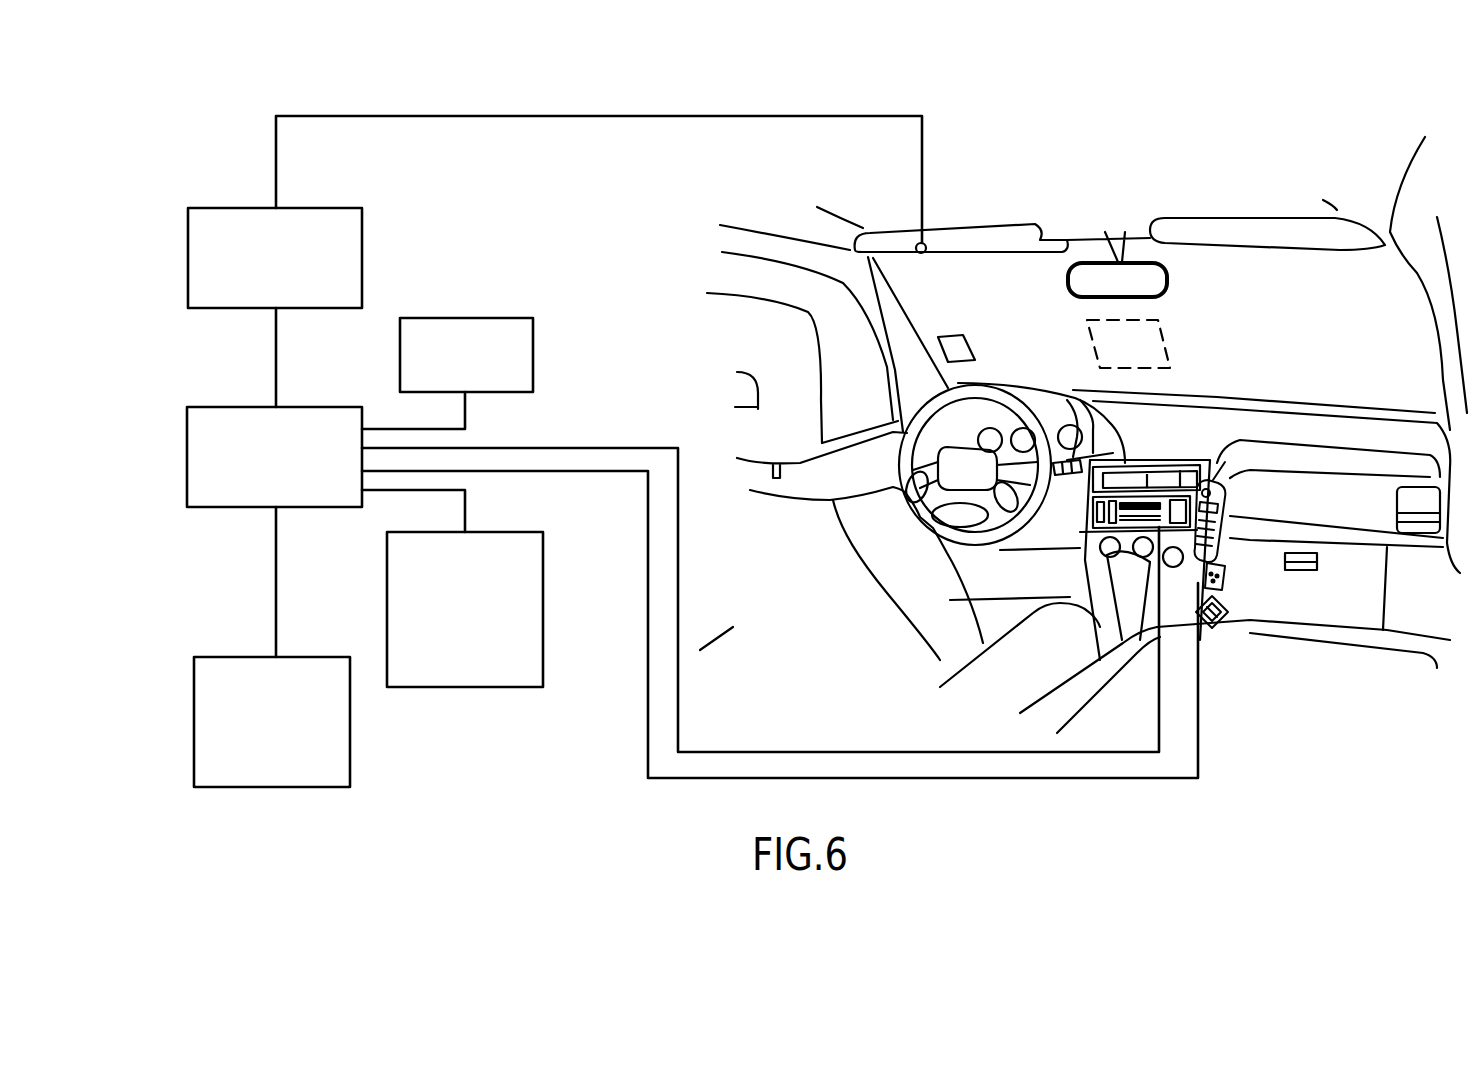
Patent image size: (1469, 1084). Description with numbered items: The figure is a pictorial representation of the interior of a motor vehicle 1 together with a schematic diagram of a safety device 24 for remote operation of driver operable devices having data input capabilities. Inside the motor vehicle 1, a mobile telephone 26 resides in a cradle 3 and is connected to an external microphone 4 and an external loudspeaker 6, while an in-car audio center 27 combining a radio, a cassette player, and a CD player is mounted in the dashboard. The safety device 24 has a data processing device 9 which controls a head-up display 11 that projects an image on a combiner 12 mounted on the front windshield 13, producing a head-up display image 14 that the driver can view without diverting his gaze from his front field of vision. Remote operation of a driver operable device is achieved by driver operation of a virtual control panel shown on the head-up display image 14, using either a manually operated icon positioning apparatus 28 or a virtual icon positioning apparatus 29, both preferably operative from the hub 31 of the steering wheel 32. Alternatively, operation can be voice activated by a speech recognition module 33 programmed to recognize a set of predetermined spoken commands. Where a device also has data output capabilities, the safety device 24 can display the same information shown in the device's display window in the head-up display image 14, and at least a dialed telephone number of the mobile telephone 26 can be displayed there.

The motor vehicle 1 is at (1147, 143).
The cradle 3 is at (1217, 535).
The external microphone 4 is at (927, 247).
The external loudspeaker 6 is at (1215, 538).
The data processing device 9 is at (303, 407).
The head-up display 11 is at (453, 318).
The combiner 12 is at (968, 345).
The front windshield 13 is at (1213, 267).
The head-up display image 14 is at (1163, 340).
The safety device 24 is at (135, 165).
The mobile telephone 26 is at (1187, 557).
The in-car audio center 27 is at (1160, 527).
The manually operated icon positioning apparatus 28 is at (490, 688).
The virtual icon positioning apparatus 29 is at (318, 657).
The hub 31 is at (957, 483).
The steering wheel 32 is at (927, 412).
The speech recognition module 33 is at (303, 207).